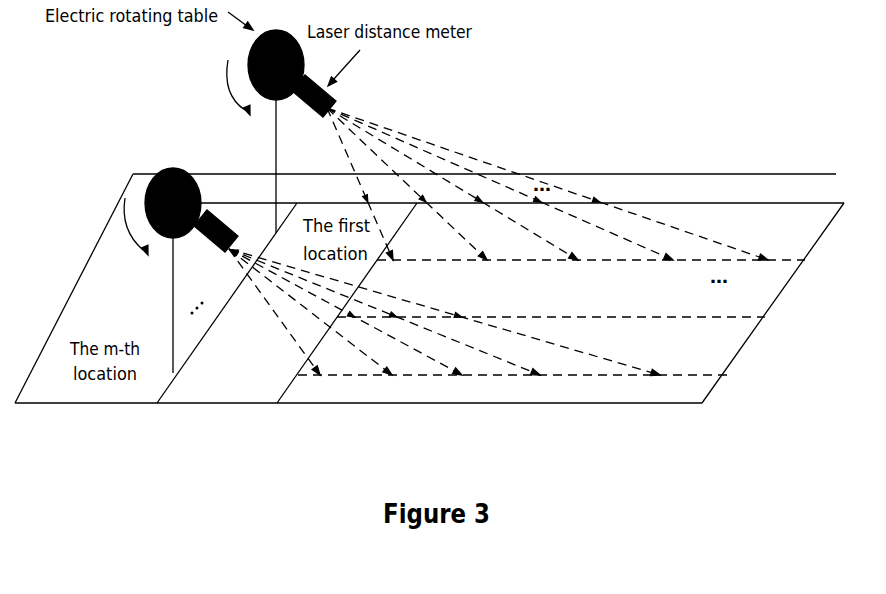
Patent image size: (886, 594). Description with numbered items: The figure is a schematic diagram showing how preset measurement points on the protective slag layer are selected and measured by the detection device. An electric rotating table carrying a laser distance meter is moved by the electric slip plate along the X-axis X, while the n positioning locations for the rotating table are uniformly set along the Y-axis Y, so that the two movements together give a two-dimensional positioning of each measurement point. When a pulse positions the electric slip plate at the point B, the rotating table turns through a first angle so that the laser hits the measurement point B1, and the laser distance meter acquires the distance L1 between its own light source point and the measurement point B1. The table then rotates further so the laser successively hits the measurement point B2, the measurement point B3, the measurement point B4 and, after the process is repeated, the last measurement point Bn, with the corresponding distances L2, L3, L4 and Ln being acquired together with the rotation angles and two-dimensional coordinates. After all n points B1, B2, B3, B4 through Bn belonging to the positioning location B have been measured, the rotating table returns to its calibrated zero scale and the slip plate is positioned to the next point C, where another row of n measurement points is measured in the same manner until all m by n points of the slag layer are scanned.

The point B is at (266, 170).
The point C is at (181, 270).
The X-axis X is at (128, 180).
The Y-axis Y is at (845, 182).
The distance L1 is at (347, 156).
The distance L2 is at (376, 156).
The distance L3 is at (404, 156).
The distance L4 is at (434, 156).
The distance Ln is at (473, 156).
The measurement point B1 is at (388, 248).
The measurement point B2 is at (463, 248).
The measurement point B3 is at (539, 248).
The measurement point B4 is at (616, 248).
The measurement point Bn is at (686, 248).